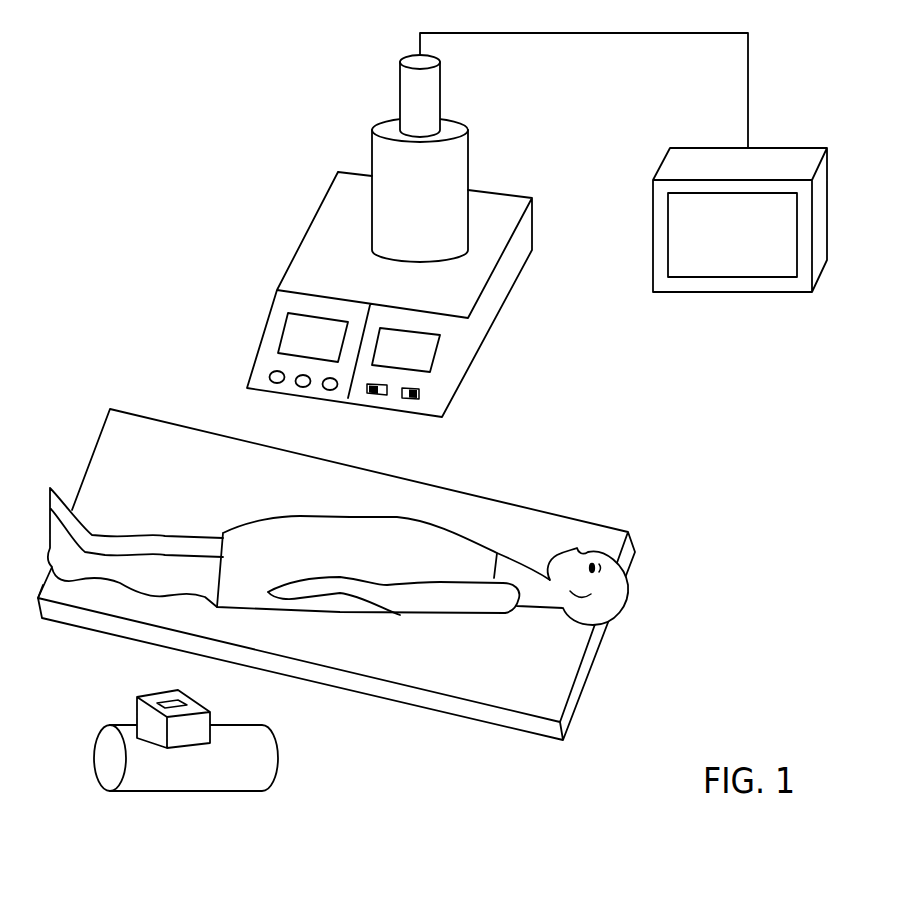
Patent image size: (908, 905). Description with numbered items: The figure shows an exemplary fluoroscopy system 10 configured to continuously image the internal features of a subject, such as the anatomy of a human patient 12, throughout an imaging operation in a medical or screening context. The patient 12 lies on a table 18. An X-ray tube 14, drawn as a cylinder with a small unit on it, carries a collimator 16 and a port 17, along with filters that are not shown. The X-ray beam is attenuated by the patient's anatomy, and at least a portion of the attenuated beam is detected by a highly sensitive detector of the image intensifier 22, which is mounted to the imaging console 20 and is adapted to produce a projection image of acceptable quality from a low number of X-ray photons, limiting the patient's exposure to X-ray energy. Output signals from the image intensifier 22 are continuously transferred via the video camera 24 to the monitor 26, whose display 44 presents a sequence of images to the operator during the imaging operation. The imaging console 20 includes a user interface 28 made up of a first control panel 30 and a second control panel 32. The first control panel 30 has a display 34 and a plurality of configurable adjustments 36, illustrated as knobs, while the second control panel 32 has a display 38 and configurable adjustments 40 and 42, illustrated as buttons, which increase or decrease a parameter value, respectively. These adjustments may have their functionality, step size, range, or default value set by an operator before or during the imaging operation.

The fluoroscopy system 10 is at (215, 80).
The patient 12 is at (440, 520).
The X-ray tube 14 is at (193, 781).
The collimator 16 is at (143, 720).
The port 17 is at (165, 700).
The table 18 is at (555, 688).
The imaging console 20 is at (320, 275).
The image intensifier 22 is at (390, 173).
The camera 24 is at (410, 98).
The monitor 26 is at (777, 160).
The user interface 28 is at (366, 284).
The first control panel 30 is at (300, 302).
The second control panel 32 is at (426, 310).
The display 34 is at (290, 338).
The configurable adjustments 36 is at (330, 393).
The display 38 is at (430, 352).
The configurable adjustment 40 is at (388, 396).
The configurable adjustment 42 is at (419, 399).
The display 44 is at (773, 233).